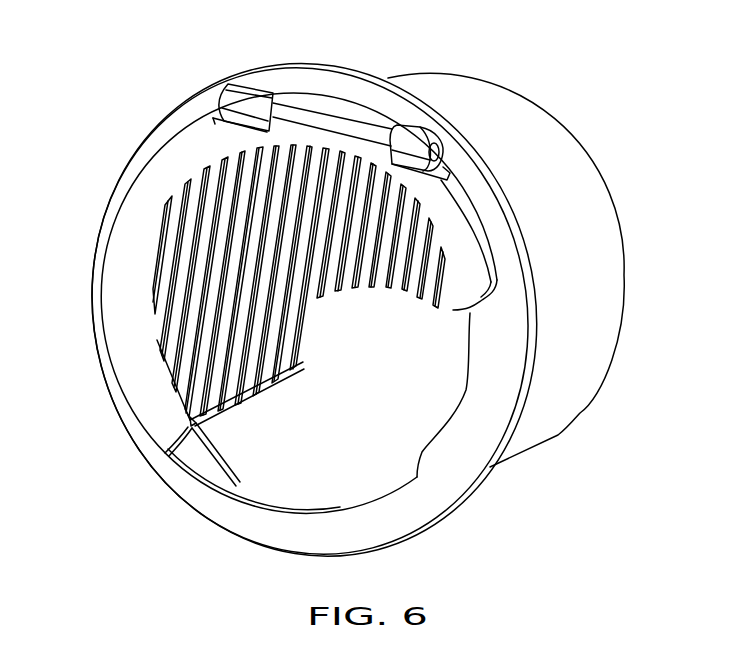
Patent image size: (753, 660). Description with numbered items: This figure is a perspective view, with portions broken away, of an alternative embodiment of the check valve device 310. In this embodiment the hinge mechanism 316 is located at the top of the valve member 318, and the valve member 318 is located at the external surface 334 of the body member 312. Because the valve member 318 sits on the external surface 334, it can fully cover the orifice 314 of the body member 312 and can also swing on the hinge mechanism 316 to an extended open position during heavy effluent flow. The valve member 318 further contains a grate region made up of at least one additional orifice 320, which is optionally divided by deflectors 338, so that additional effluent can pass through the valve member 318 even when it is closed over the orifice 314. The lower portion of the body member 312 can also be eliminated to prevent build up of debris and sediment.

The check valve device 310 is at (565, 80).
The body member 312 is at (620, 210).
The orifice 314 is at (257, 472).
The hinge mechanism 316 is at (221, 94).
The valve member 318 is at (110, 327).
The additional orifice 320 is at (240, 397).
The external surface 334 is at (481, 452).
The deflectors 338 is at (397, 298).